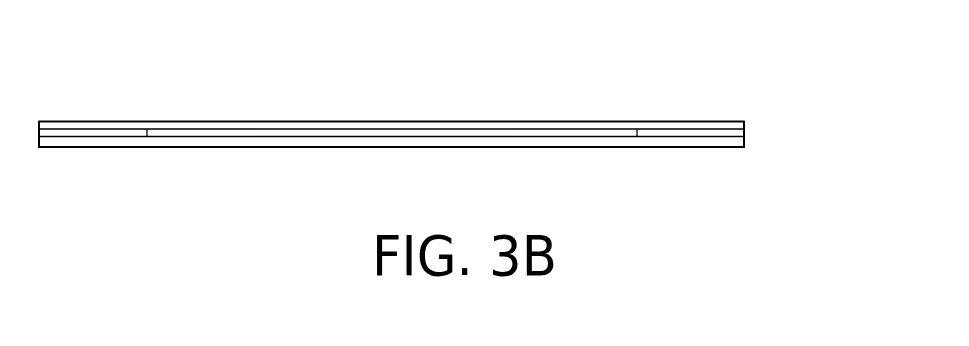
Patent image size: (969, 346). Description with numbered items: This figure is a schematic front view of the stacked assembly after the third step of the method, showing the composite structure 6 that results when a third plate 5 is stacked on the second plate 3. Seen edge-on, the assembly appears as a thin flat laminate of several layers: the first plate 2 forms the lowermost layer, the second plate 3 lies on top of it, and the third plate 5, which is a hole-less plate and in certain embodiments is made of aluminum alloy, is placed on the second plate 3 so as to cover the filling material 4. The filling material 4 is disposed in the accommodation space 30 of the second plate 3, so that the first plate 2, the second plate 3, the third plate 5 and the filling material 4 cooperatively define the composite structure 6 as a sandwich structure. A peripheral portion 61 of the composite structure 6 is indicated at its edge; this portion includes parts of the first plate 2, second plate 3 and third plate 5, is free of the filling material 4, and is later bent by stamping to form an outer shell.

The first plate 2 is at (705, 147).
The second plate 3 is at (745, 133).
The filling material 4 is at (433, 100).
The accommodation space 30 is at (600, 133).
The third plate 5 is at (565, 122).
The composite structure 6 is at (838, 15).
The peripheral portion 61 is at (105, 137).